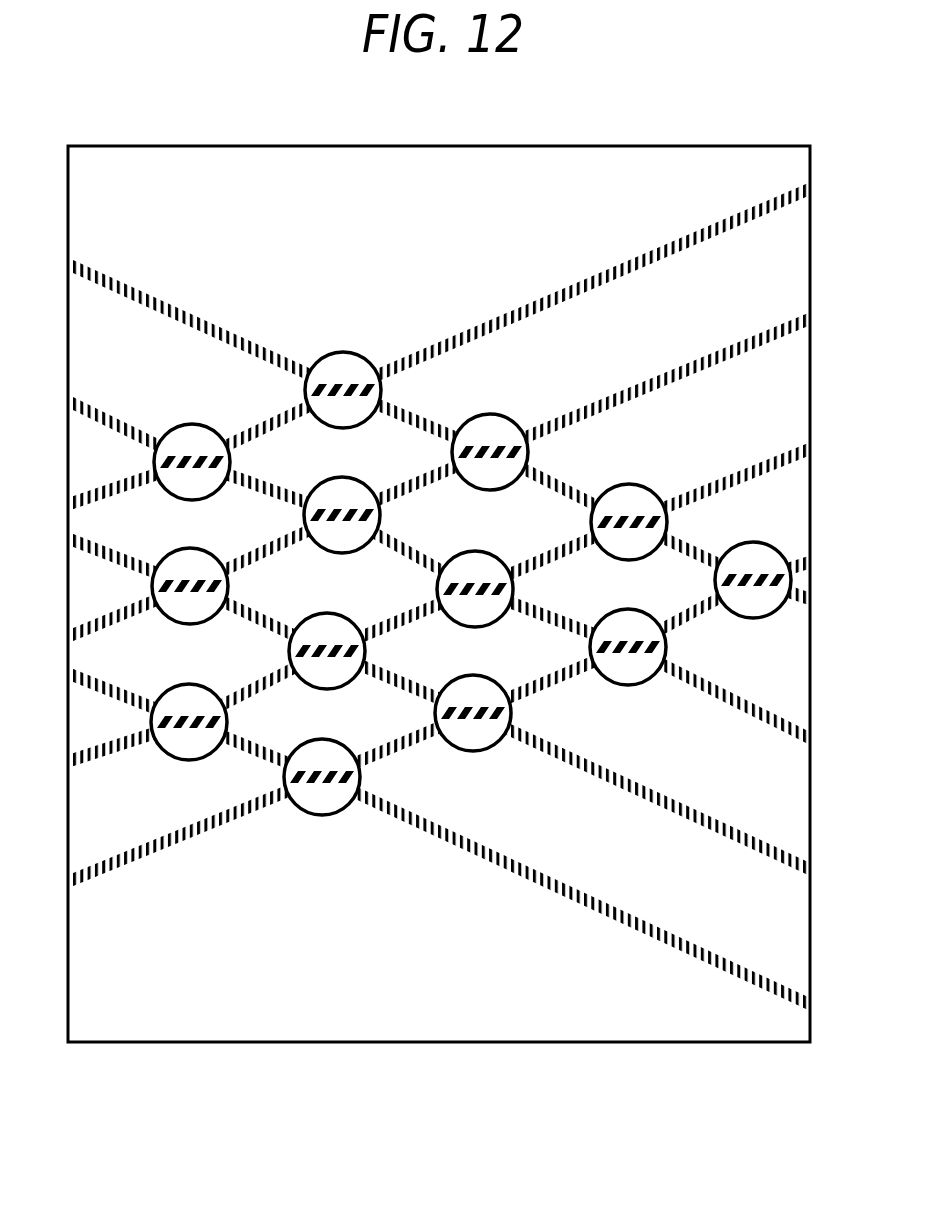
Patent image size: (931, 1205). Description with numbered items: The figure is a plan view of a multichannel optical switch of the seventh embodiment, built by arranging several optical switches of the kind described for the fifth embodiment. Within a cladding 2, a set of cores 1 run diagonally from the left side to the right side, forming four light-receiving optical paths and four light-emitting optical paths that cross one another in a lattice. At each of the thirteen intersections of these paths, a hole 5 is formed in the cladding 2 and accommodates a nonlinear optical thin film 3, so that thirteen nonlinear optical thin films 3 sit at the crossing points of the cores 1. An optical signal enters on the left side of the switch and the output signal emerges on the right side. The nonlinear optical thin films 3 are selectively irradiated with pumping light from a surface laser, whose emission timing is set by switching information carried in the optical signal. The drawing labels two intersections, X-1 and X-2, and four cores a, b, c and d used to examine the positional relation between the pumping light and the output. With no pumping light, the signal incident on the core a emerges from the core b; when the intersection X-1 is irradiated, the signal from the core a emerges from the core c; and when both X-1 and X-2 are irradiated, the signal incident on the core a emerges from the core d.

The core 1 is at (438, 553).
The cladding 2 is at (191, 187).
The nonlinear optical thin film 3 is at (343, 386).
The hole 5 is at (471, 554).
The intersection X-1 is at (198, 450).
The intersection X-2 is at (359, 374).
The core a is at (111, 428).
The core b is at (736, 698).
The core c is at (618, 268).
The core d is at (798, 596).